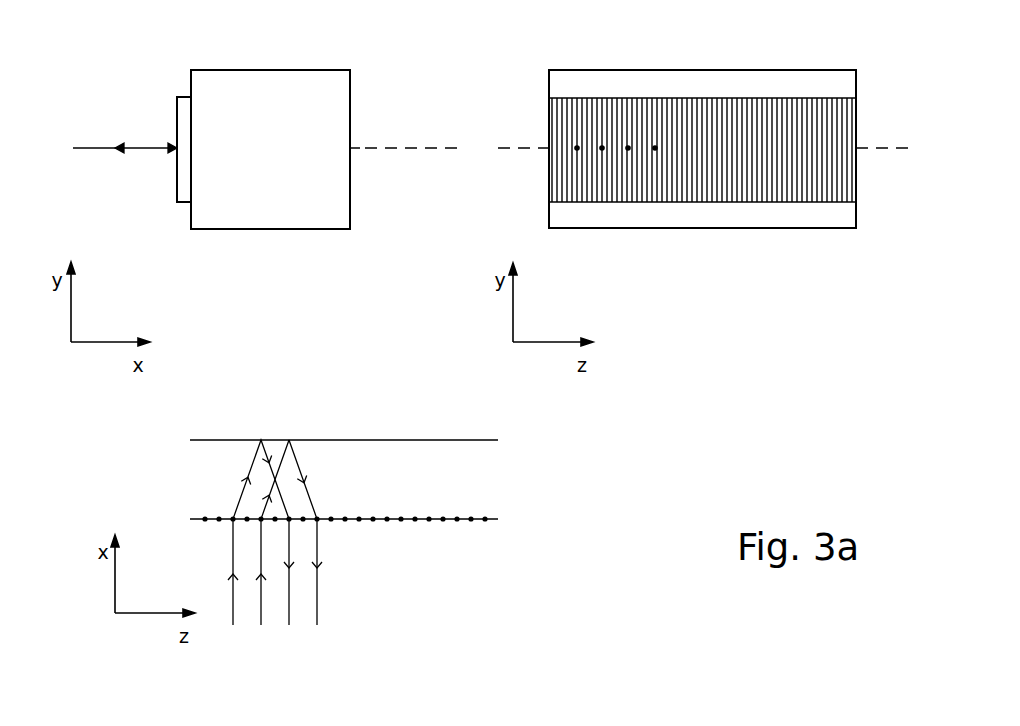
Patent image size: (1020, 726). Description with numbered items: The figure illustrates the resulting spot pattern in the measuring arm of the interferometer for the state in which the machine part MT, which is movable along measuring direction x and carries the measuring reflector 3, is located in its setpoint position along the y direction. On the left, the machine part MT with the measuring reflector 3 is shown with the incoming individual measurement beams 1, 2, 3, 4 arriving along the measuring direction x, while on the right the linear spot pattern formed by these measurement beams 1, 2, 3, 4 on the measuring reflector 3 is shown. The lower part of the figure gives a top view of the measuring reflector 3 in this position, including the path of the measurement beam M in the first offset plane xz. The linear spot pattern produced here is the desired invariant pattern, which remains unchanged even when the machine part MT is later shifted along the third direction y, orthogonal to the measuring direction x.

The measurement beam 1 is at (577, 150).
The measurement beam 2 is at (628, 150).
The measuring reflector 3 is at (185, 97).
The measurement beam 4 is at (655, 150).
The measurement beam M is at (116, 168).
The machine part MT is at (268, 233).